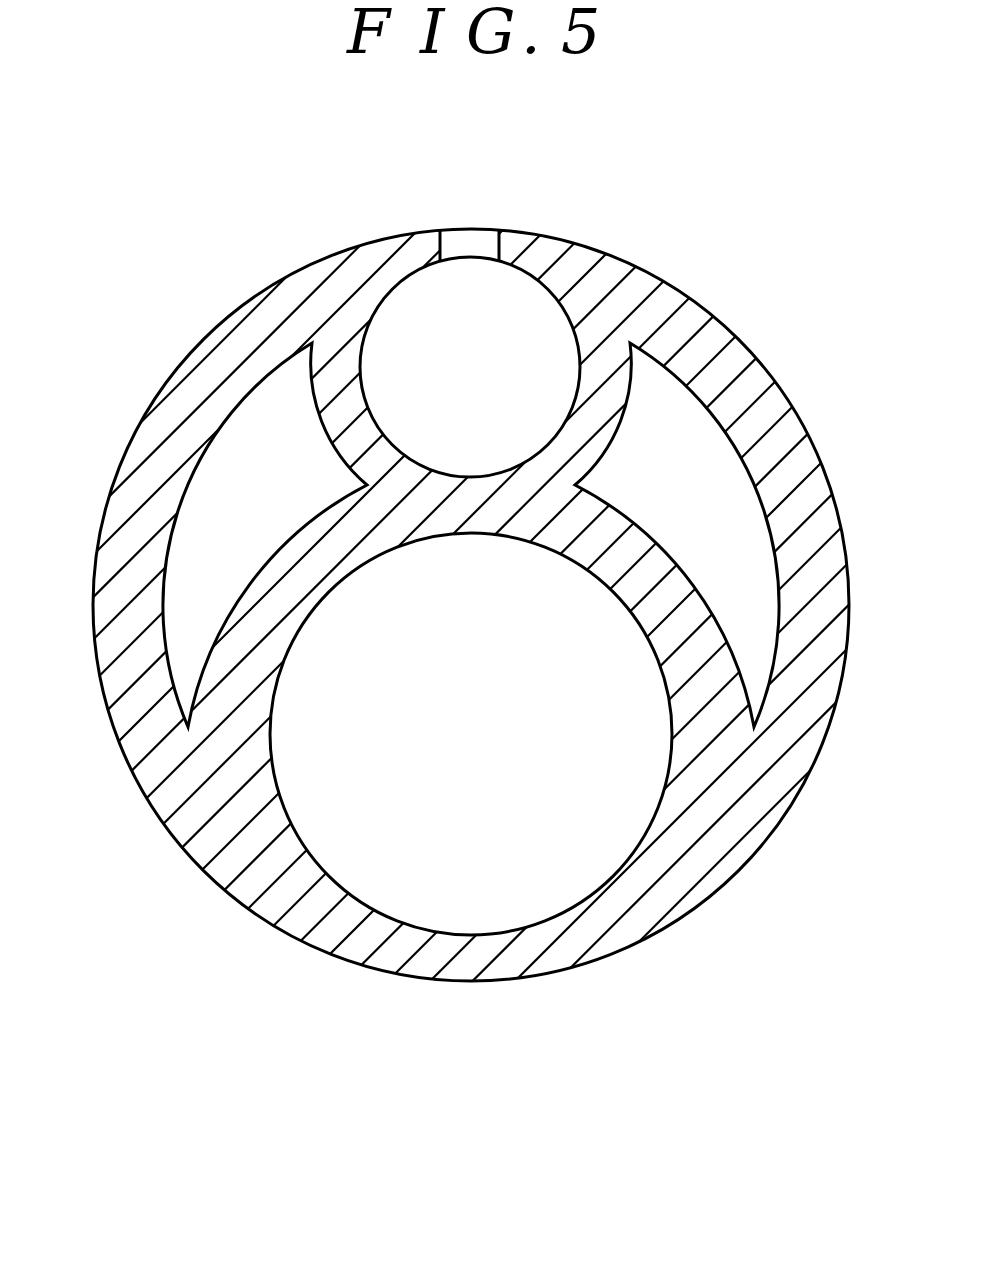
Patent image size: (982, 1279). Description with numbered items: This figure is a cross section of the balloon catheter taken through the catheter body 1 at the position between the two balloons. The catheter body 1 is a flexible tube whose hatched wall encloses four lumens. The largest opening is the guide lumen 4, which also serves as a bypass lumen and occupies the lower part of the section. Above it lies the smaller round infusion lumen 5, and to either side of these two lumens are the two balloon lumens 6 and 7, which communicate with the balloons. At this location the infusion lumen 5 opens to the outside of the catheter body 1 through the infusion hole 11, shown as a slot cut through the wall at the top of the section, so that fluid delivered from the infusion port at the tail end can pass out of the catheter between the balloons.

The catheter body 1 is at (727, 323).
The guide lumen 4 is at (522, 858).
The infusion lumen 5 is at (530, 313).
The balloon lumen 6 is at (230, 490).
The balloon lumen 7 is at (710, 488).
The infusion hole 11 is at (441, 245).